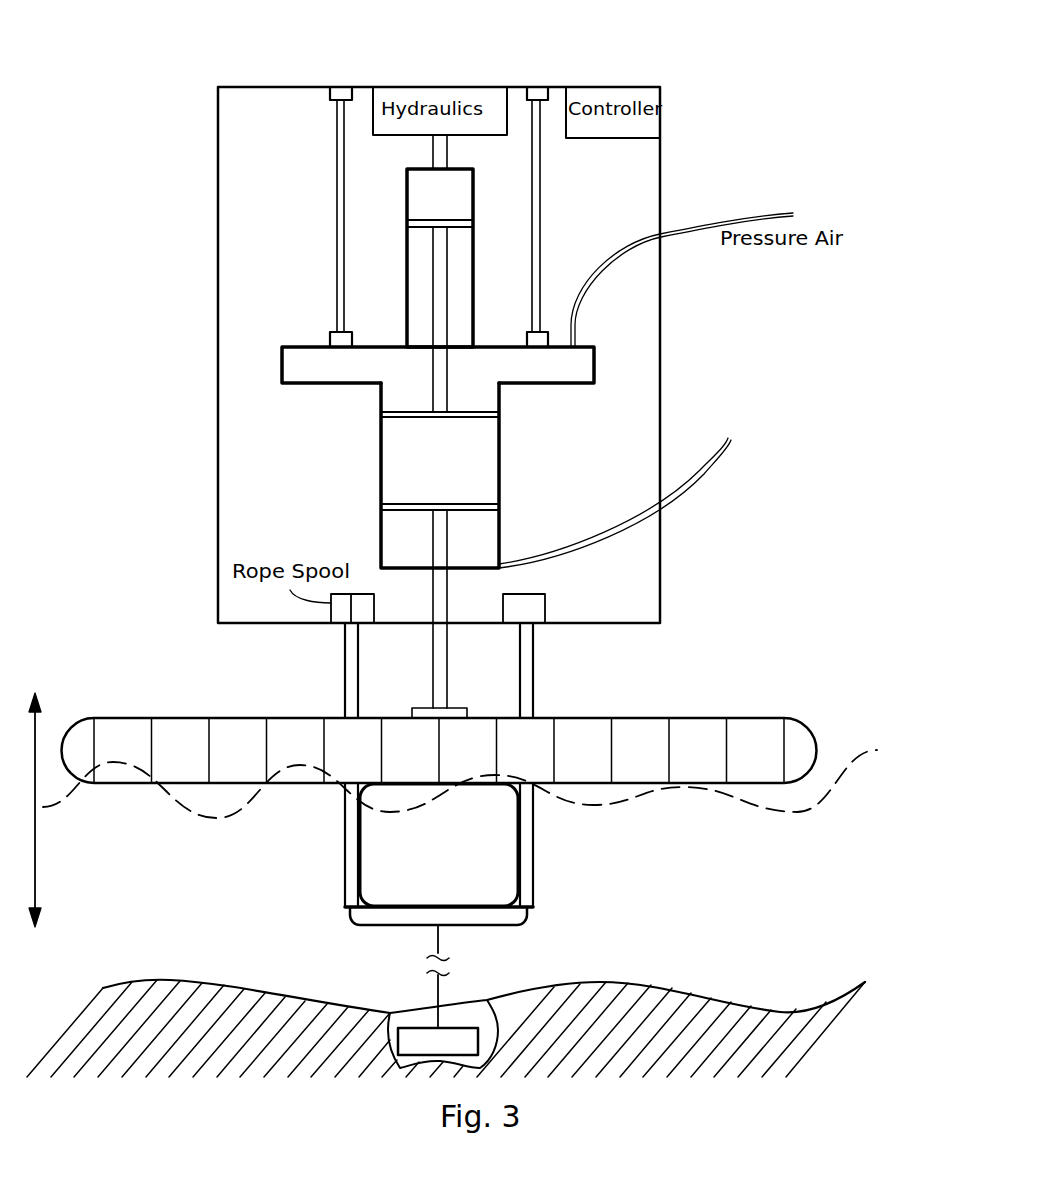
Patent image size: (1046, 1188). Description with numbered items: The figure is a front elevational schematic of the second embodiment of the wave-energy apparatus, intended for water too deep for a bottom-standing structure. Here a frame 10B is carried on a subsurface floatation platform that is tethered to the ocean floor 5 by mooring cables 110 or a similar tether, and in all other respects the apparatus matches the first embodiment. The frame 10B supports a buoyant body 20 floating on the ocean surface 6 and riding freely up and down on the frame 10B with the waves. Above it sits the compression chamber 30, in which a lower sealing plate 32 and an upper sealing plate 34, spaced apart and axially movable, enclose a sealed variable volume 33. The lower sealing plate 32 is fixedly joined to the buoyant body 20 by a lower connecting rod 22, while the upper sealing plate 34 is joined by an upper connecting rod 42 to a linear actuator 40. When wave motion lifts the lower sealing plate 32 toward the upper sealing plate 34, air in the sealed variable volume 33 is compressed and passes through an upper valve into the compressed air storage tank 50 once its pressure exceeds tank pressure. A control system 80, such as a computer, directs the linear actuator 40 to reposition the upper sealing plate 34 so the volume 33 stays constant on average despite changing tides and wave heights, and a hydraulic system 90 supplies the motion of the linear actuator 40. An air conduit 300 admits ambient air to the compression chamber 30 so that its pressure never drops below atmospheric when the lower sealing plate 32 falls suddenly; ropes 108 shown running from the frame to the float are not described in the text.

The ocean floor 5 is at (703, 1000).
The ocean surface 6 is at (833, 798).
The frame 10B is at (345, 885).
The buoyant body 20 is at (723, 720).
The lower connecting rod 22 is at (447, 677).
The compression chamber 30 is at (500, 478).
The lower sealing plate 32 is at (471, 504).
The sealed variable volume 33 is at (400, 462).
The upper sealing plate 34 is at (471, 417).
The linear actuator 40 is at (473, 280).
The upper connecting rod 42 is at (433, 297).
The compressed air storage tank 50 is at (595, 362).
The control system 80 is at (615, 138).
The hydraulic system 90 is at (395, 136).
The ropes 108 is at (533, 692).
The mooring cables 110 is at (437, 1010).
The air conduit 300 is at (700, 505).